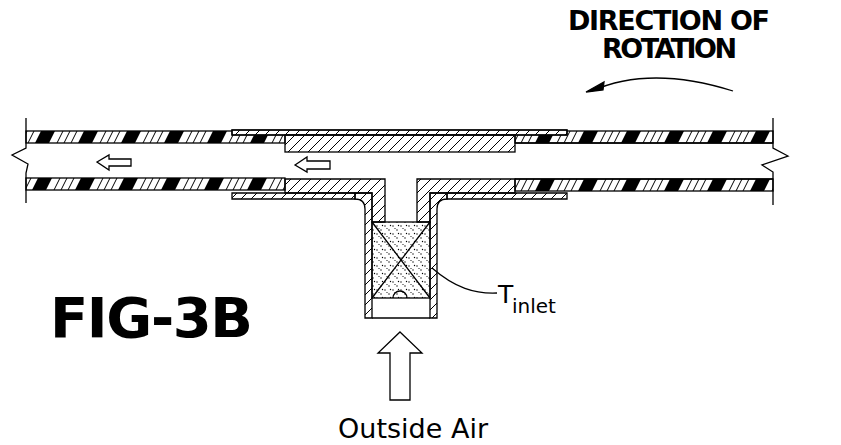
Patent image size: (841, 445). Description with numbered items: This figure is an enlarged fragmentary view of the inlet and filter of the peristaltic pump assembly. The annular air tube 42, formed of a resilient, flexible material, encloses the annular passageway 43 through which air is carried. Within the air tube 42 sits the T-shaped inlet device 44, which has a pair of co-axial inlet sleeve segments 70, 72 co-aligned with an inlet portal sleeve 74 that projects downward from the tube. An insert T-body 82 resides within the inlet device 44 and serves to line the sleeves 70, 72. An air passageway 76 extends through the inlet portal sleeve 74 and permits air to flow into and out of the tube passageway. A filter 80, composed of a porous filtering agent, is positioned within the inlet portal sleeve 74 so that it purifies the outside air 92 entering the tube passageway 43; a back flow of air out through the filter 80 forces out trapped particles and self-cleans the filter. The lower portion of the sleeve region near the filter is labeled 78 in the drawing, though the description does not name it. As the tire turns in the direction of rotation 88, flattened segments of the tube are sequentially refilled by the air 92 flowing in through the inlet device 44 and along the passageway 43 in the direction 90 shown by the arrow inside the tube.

The air tube 42 is at (78, 131).
The annular passageway 43 is at (630, 156).
The inlet device 44 is at (376, 273).
The inlet sleeve segment 70 is at (437, 131).
The inlet sleeve segment 72 is at (277, 131).
The inlet portal sleeve 74 is at (365, 252).
The air passageway 76 is at (408, 312).
The lower housing block 78 is at (484, 169).
The filter 80 is at (388, 299).
The insert T-body 82 is at (246, 199).
The direction of rotation 88 is at (733, 91).
The direction of air flow 90 is at (115, 167).
The air 92 is at (410, 375).